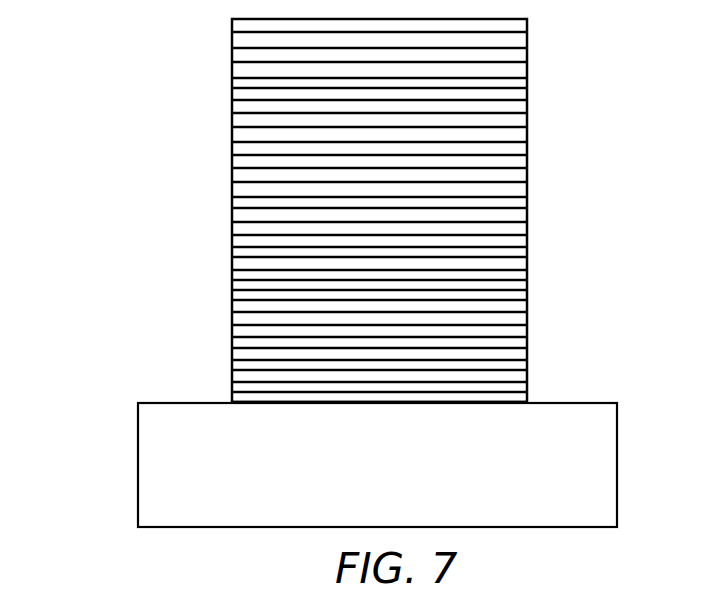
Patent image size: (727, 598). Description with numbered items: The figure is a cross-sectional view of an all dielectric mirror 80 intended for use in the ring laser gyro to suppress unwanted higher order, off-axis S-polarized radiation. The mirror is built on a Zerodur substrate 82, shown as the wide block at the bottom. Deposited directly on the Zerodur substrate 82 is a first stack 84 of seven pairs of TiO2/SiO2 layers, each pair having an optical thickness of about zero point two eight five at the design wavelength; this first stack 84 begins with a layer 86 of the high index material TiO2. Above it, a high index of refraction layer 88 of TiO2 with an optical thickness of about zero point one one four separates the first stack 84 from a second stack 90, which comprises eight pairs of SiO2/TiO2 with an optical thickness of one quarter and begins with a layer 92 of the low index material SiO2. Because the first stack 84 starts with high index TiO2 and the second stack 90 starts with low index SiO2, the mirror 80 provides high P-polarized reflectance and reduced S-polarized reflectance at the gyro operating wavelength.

The all dielectric mirror 80 is at (153, 318).
The Zerodur substrate 82 is at (195, 494).
The first stack 84 is at (532, 240).
The layer of TiO2 86 is at (228, 401).
The high index of refraction layer 88 is at (232, 233).
The second stack 90 is at (218, 210).
The layer of SiO2 92 is at (527, 213).